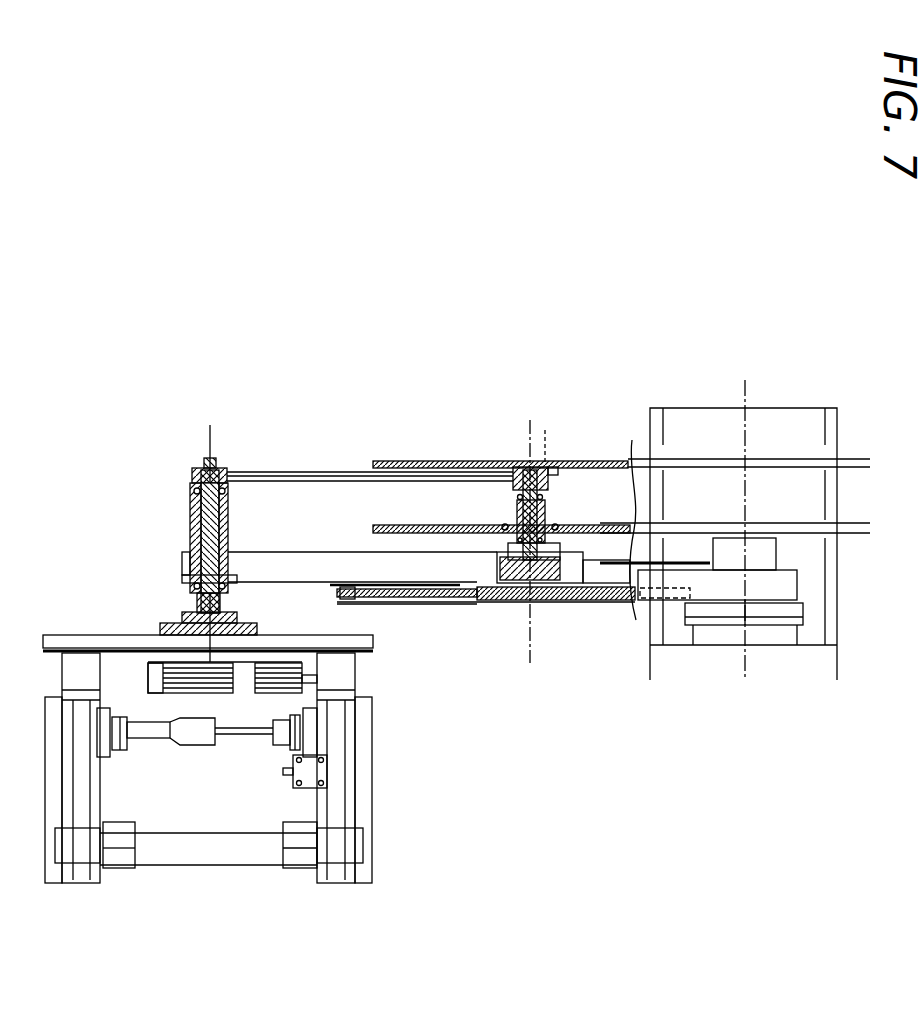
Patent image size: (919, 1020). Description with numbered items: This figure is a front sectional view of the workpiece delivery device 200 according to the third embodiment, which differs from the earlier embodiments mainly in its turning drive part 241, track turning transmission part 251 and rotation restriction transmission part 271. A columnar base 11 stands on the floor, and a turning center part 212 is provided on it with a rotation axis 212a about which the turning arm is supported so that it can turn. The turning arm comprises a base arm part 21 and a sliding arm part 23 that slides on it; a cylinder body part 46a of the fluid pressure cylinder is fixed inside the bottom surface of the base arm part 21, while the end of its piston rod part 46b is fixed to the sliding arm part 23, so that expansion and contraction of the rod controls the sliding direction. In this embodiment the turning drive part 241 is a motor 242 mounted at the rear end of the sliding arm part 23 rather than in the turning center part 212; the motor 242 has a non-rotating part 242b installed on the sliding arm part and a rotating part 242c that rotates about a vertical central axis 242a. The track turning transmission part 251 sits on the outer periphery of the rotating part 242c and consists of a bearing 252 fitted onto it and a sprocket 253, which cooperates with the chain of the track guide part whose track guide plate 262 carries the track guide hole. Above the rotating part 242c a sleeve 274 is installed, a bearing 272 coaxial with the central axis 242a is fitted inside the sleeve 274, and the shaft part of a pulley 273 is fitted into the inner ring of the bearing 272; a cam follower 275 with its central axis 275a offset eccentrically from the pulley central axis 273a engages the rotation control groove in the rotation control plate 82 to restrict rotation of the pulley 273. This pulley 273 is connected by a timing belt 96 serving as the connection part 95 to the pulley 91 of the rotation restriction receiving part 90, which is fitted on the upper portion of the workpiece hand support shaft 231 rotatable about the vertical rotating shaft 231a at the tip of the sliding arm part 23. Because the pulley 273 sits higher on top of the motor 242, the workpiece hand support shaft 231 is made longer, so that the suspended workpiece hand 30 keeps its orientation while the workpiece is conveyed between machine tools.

The workpiece delivery device 200 is at (805, 388).
The turning center part 212 is at (815, 571).
The rotation axis 212a is at (745, 662).
The base 11 is at (827, 660).
The base arm part 21 is at (677, 585).
The turning drive part 241 is at (638, 440).
The motor 242 is at (548, 483).
The central axis 242a is at (532, 640).
The non-rotating part 242b is at (575, 565).
The rotating part 242c is at (543, 513).
The rotation restriction transmission part 271 is at (612, 343).
The bearing 272 is at (505, 462).
The pulley 273 is at (512, 467).
The central axis 273a is at (528, 462).
The sleeve 274 is at (480, 462).
The cam follower 275 is at (560, 462).
The central axis 275a is at (546, 458).
The rotation control plate 82 is at (375, 461).
The connection part 95 is at (253, 478).
The timing belt 96 is at (365, 415).
The rotation restriction receiving part 90 is at (192, 475).
The pulley 91 is at (146, 428).
The vertical rotating shaft 231a is at (207, 450).
The workpiece hand support shaft 231 is at (195, 535).
The workpiece hand 30 is at (133, 603).
The sliding arm part 23 is at (283, 580).
The track turning transmission part 251 is at (397, 486).
The bearing 252 is at (500, 521).
The sprocket 253 is at (515, 508).
The track guide plate 262 is at (392, 598).
The piston rod part 46b is at (413, 597).
The cylinder body part 46a is at (488, 600).